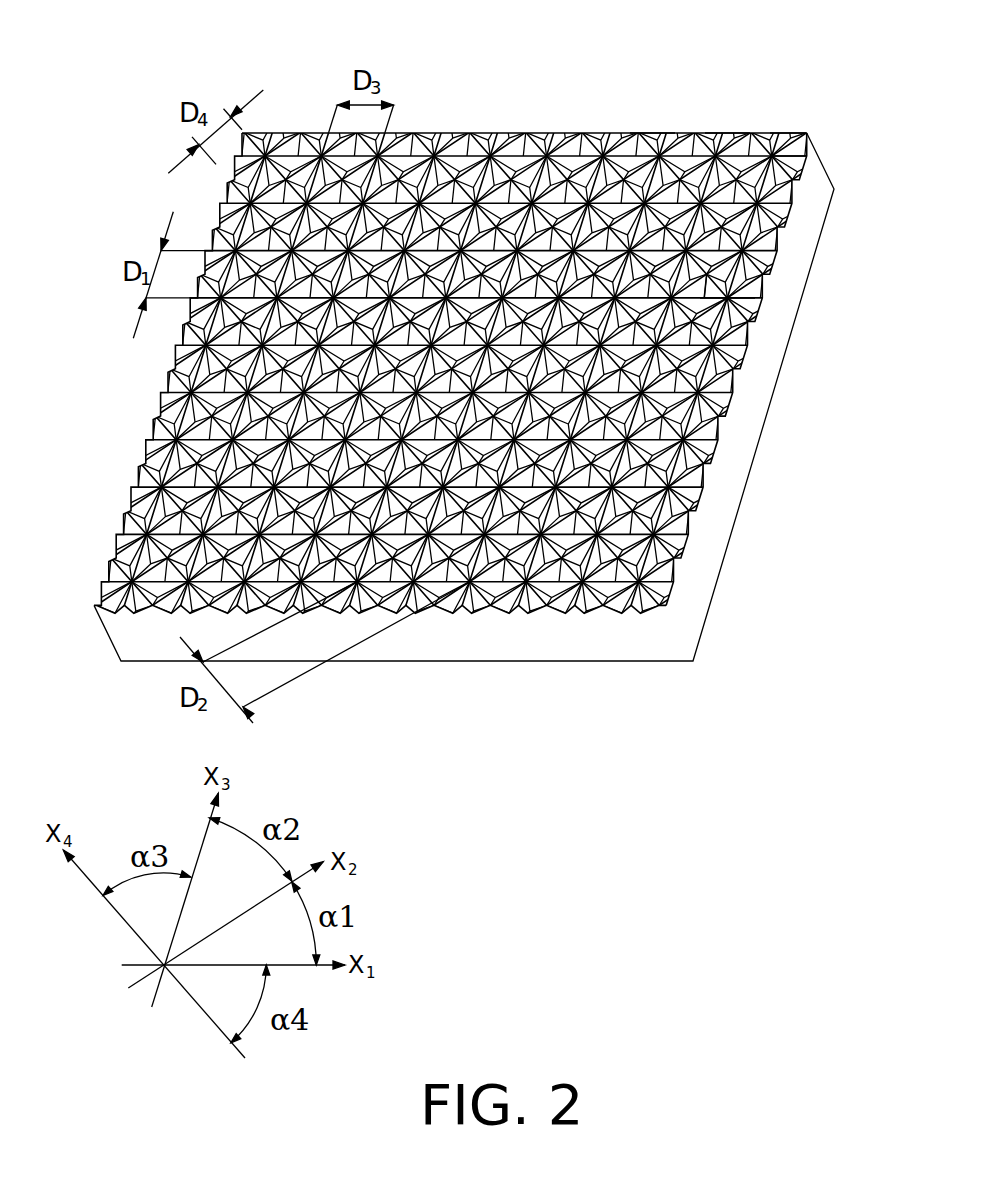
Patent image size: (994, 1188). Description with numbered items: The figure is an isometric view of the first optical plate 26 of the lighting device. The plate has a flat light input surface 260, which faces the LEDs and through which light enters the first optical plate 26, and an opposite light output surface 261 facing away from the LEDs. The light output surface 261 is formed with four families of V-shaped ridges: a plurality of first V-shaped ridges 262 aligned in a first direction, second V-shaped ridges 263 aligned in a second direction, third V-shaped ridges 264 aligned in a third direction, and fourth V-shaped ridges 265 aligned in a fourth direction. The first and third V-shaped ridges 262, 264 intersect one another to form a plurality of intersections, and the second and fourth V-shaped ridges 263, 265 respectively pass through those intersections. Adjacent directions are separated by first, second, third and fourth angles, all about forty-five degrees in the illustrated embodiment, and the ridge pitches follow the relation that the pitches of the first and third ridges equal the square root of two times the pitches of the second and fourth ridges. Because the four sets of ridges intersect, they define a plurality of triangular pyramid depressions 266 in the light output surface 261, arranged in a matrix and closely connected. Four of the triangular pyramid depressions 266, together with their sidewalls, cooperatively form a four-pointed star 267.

The first optical plate 26 is at (498, 76).
The light input surface 260 is at (521, 663).
The light output surface 261 is at (706, 479).
The first V-shaped ridges 262 is at (811, 152).
The second V-shaped ridges 263 is at (800, 133).
The third V-shaped ridges 264 is at (727, 133).
The fourth V-shaped ridges 265 is at (651, 133).
The triangular pyramid depressions 266 is at (801, 313).
The four-pointed star 267 is at (804, 282).